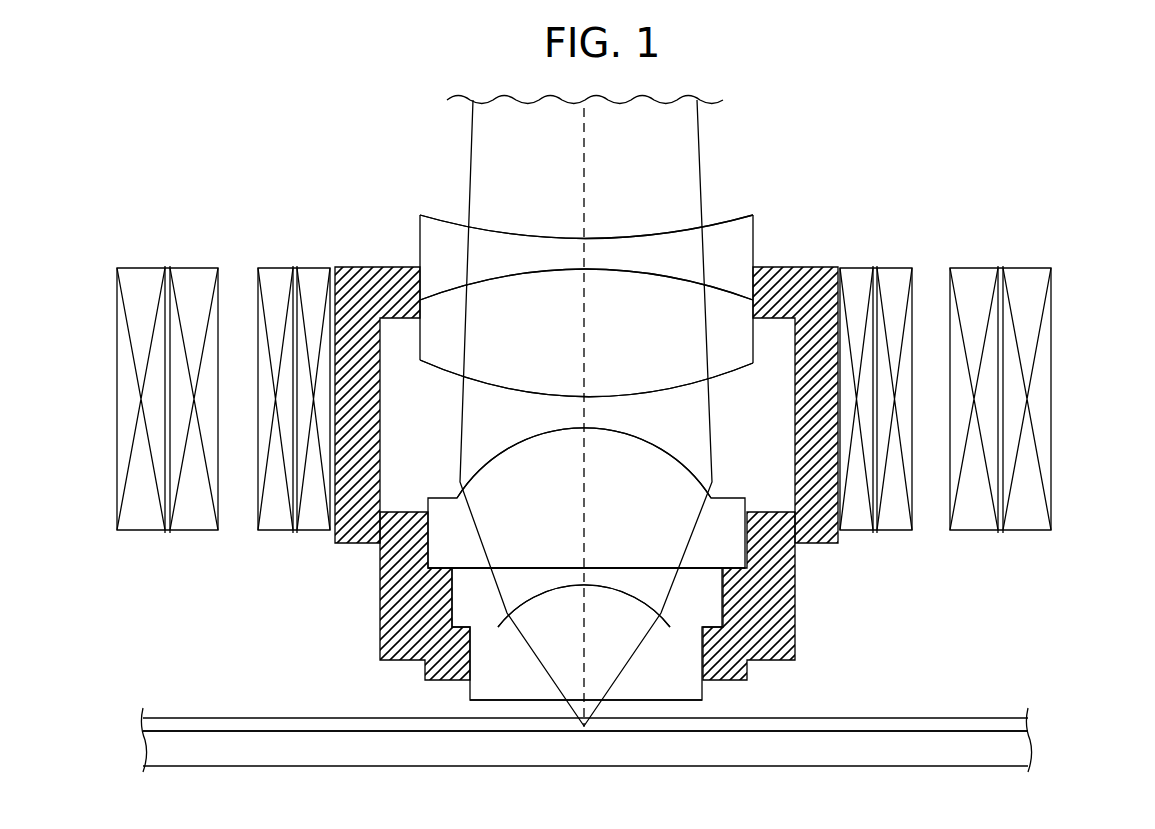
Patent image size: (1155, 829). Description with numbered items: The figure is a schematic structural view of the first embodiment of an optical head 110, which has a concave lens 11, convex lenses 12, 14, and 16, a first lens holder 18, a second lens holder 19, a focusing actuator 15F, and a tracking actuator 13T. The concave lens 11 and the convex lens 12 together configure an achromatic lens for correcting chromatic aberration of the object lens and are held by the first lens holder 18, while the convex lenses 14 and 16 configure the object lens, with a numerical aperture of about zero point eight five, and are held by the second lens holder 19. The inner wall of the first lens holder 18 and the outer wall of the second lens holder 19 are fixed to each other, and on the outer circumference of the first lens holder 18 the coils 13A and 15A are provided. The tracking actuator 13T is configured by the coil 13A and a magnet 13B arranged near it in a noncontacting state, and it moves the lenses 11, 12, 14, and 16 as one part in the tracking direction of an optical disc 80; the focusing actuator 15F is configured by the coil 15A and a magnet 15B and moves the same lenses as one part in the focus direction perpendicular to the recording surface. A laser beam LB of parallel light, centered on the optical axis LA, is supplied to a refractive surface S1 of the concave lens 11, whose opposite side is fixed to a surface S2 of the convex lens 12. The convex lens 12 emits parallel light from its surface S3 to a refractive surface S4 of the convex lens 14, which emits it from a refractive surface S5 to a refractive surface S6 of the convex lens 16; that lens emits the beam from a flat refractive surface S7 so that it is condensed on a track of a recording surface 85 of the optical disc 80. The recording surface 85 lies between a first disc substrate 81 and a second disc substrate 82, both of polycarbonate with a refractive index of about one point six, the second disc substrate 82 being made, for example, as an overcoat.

The optical head 110 is at (877, 128).
The optical axis LA is at (590, 127).
The laser beam LB is at (700, 128).
The concave lens 11 is at (745, 214).
The convex lens 12 is at (736, 342).
The convex lens 14 is at (724, 518).
The convex lens 16 is at (703, 690).
The first lens holder 18 is at (372, 266).
The second lens holder 19 is at (380, 634).
The tracking actuator 13T is at (157, 215).
The coil 13A is at (277, 268).
The magnet 13B is at (193, 268).
The coil 15A is at (313, 532).
The magnet 15B is at (140, 532).
The focusing actuator 15F is at (100, 580).
The optical disc 80 is at (1085, 708).
The first disc substrate 81 is at (1026, 724).
The second disc substrate 82 is at (1026, 750).
The recording surface 85 is at (148, 729).
The refractive surface S1 is at (642, 233).
The refractive surface S2 is at (660, 278).
The reflective surface S3 is at (612, 394).
The refractive surface S4 is at (612, 430).
The refractive surface S5 is at (612, 567).
The refractive surface S6 is at (612, 597).
The flat refractive surface S7 is at (668, 699).